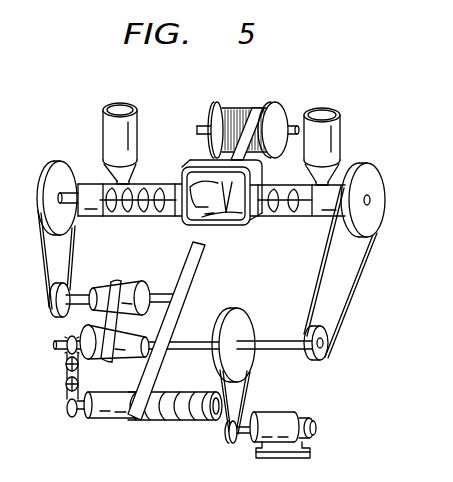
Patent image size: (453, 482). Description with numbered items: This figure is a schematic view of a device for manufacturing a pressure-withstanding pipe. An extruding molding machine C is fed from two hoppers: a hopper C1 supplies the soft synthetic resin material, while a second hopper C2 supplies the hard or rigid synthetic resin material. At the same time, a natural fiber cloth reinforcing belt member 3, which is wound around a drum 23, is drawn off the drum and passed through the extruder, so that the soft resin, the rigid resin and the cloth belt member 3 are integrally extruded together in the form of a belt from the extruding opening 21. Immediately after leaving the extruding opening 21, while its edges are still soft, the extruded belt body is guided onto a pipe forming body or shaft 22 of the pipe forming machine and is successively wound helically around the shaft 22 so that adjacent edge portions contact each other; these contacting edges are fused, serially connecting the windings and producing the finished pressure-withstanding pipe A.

The hopper C1 is at (117, 108).
The extruding molding machine C is at (153, 112).
The drum 23 is at (250, 106).
The hopper C2 is at (325, 110).
The extruding opening 21 is at (218, 226).
The reinforcing belt member 3 is at (186, 267).
The pipe forming shaft 22 is at (113, 419).
The pressure-withstanding pipe A is at (158, 421).